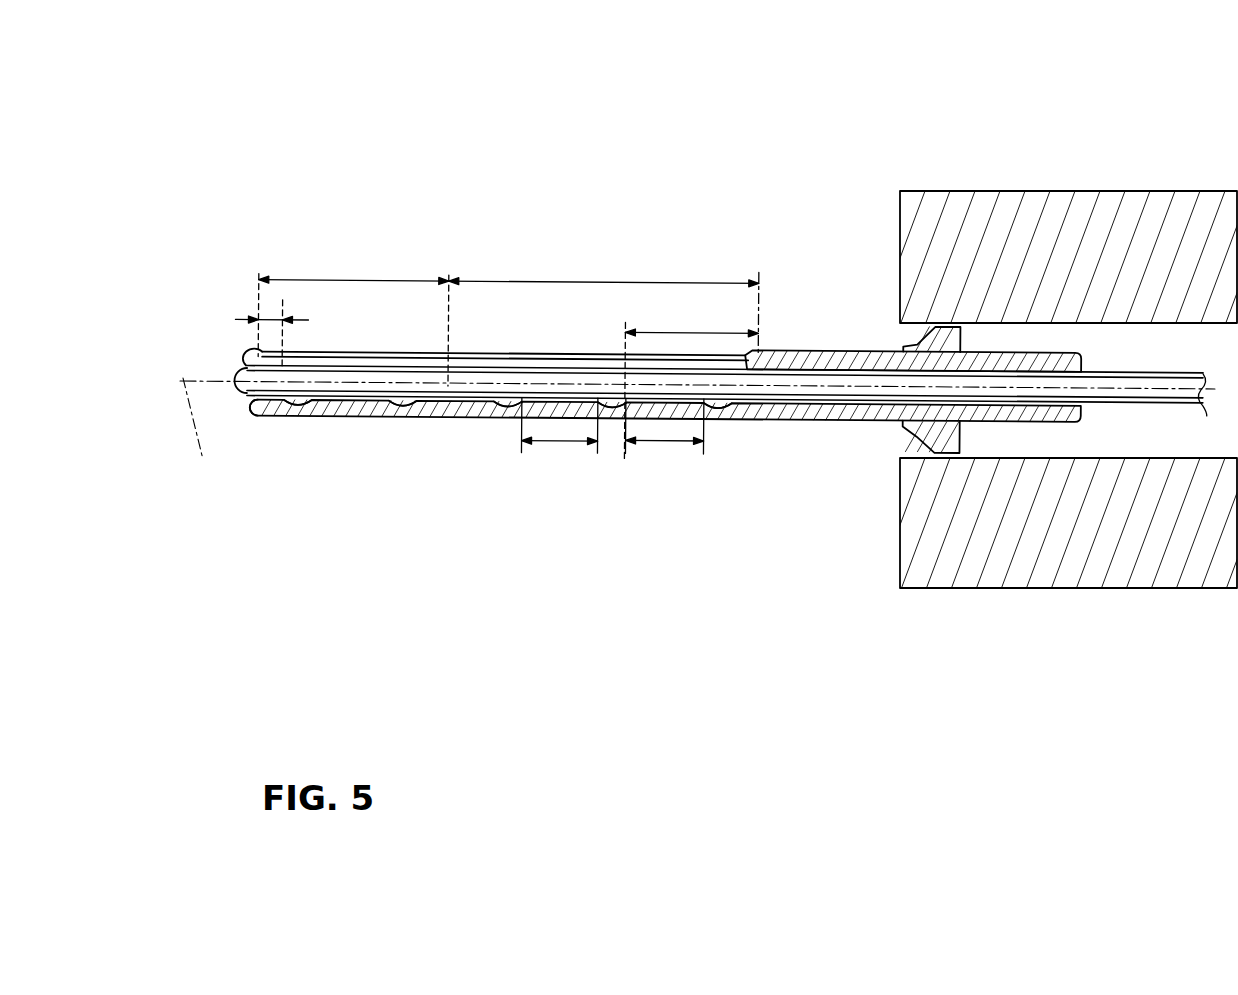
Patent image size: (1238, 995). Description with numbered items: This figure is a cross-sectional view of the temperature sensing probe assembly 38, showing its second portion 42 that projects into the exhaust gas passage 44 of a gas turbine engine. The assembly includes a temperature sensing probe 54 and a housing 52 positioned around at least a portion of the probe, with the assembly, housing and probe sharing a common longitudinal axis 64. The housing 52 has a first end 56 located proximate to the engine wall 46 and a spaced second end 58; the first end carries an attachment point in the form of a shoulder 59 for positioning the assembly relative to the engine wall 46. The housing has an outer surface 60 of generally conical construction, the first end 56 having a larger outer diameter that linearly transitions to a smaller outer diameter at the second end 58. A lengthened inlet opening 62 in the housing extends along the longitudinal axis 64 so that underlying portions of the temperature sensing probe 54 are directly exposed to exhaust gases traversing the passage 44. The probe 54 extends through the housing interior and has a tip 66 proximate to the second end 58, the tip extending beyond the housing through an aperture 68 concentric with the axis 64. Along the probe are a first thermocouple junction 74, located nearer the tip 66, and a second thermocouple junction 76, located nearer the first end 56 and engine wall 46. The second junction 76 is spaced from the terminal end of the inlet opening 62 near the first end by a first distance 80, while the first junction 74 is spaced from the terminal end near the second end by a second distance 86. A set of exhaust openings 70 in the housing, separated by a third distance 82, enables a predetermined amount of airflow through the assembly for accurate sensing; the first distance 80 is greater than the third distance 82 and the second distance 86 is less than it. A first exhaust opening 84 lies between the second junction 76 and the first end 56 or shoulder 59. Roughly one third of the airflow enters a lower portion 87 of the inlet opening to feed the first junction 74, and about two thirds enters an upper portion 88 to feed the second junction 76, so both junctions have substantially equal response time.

The temperature sensing probe assembly 38 is at (458, 73).
The second portion 42 is at (817, 258).
The exhaust gas passage 44 is at (787, 578).
The engine wall 46 is at (1060, 191).
The housing 52 is at (880, 414).
The temperature sensing probe 54 is at (1128, 386).
The first end 56 is at (892, 345).
The second end 58 is at (242, 344).
The shoulder 59 is at (950, 332).
The outer surface 60 is at (872, 345).
The inlet opening 62 is at (745, 350).
The longitudinal axis 64 is at (697, 428).
The tip 66 is at (223, 363).
The aperture 68 is at (243, 398).
The exhaust openings 70 is at (495, 407).
The first thermocouple junction 74 is at (333, 402).
The second thermocouple junction 76 is at (588, 374).
The first distance 80 is at (683, 331).
The third distance 82 is at (672, 443).
The first exhaust opening 84 is at (729, 404).
The second distance 86 is at (270, 318).
The lower portion 87 is at (322, 280).
The upper portion 88 is at (550, 281).